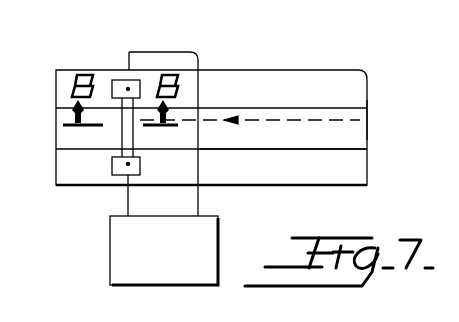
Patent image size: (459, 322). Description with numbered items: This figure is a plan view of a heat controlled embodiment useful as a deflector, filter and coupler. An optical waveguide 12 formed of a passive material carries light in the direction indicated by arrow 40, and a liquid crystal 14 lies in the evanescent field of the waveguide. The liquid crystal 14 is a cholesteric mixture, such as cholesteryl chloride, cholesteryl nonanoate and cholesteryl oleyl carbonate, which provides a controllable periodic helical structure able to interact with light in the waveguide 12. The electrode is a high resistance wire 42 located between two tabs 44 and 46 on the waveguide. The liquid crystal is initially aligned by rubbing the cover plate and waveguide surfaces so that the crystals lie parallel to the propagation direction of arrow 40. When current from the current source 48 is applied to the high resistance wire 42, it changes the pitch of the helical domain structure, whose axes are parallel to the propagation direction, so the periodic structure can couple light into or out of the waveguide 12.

The optical waveguide 12 is at (307, 118).
The liquid crystal 14 is at (413, 120).
The arrow 40 is at (272, 127).
The high resistance wire 42 is at (122, 132).
The tab 44 is at (128, 89).
The tab 46 is at (140, 168).
The current source 48 is at (110, 258).